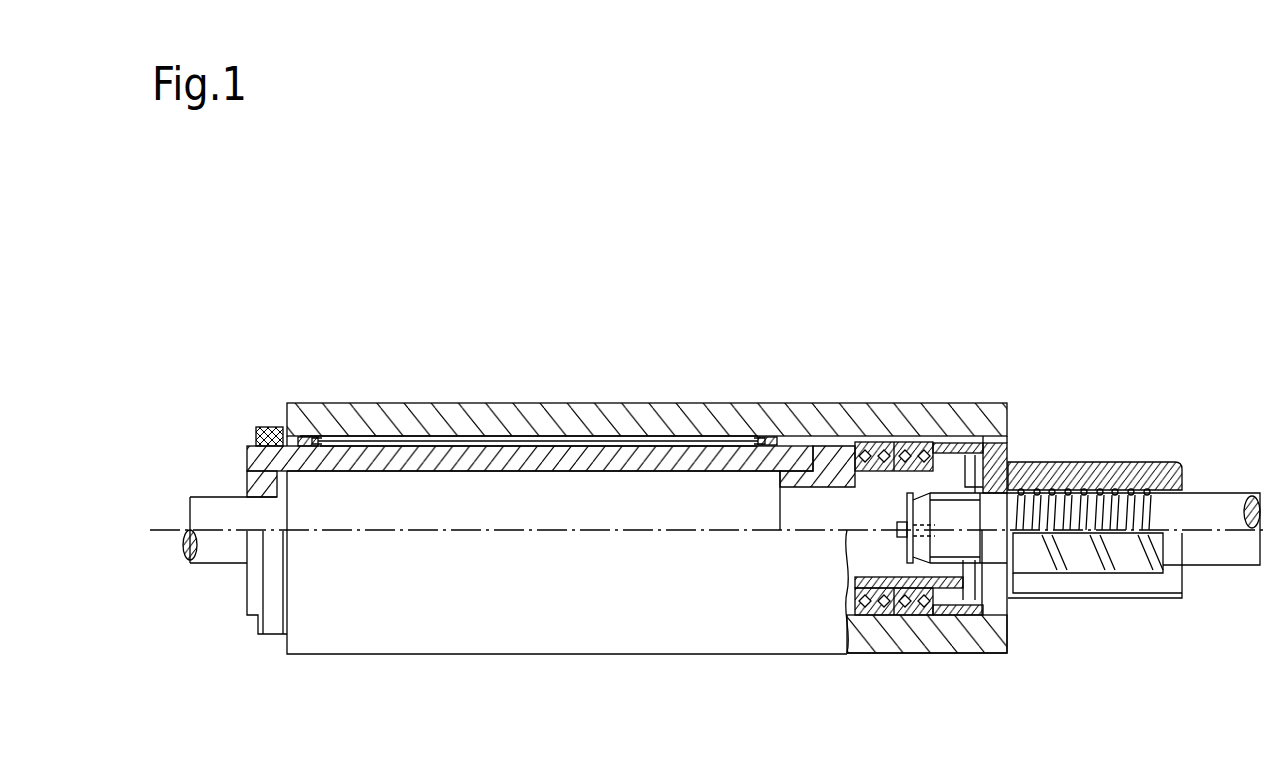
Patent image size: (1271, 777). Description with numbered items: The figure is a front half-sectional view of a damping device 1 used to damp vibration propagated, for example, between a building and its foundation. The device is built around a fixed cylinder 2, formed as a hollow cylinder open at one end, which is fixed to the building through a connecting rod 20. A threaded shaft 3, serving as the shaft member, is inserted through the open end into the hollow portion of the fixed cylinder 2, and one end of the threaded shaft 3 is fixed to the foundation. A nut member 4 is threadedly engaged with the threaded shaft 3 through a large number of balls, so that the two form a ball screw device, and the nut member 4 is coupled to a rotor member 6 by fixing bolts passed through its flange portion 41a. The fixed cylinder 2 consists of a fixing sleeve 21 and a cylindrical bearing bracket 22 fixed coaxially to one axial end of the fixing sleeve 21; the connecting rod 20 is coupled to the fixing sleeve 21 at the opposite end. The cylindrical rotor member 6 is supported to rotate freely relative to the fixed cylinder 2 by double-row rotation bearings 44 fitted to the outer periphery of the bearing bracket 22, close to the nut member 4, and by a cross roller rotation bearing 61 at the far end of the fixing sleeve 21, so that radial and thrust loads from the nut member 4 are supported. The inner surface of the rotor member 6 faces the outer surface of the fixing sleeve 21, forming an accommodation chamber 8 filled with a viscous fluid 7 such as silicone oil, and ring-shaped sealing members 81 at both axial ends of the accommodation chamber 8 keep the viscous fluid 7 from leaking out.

The damping device 1 is at (492, 256).
The fixed cylinder 2 is at (572, 458).
The threaded shaft 3 is at (1213, 488).
The nut member 4 is at (1100, 462).
The rotor member 6 is at (664, 400).
The viscous fluid 7 is at (505, 440).
The accommodation chamber 8 is at (431, 438).
The connecting rod 20 is at (216, 497).
The fixing sleeve 21 is at (380, 450).
The bearing bracket 22 is at (835, 458).
The flange portion 41a is at (1005, 455).
The rotation bearings 44 is at (917, 445).
The rotation bearing 61 is at (274, 427).
The sealing members 81 is at (300, 437).